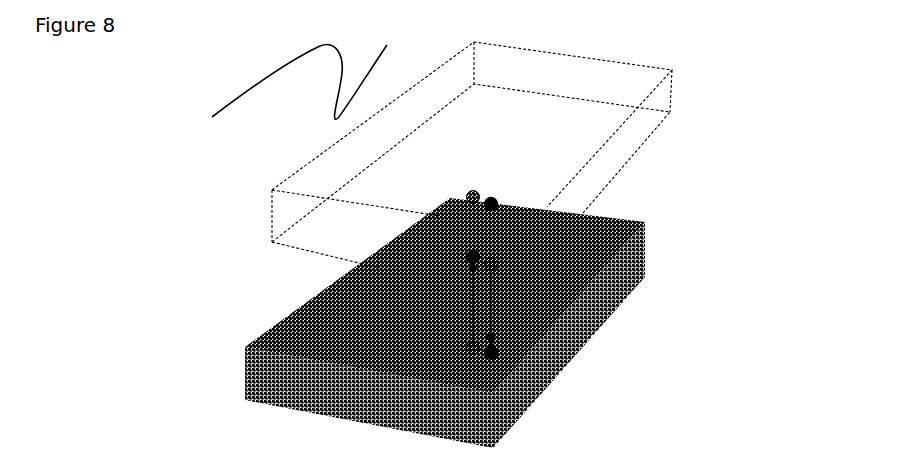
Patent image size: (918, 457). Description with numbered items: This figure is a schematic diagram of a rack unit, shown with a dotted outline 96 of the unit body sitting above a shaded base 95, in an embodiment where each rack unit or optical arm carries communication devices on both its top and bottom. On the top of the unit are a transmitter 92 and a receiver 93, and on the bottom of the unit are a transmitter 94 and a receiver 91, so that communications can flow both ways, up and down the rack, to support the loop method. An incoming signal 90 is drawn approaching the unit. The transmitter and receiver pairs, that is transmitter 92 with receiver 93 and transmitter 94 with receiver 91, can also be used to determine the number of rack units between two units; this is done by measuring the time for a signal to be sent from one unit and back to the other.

The incident radiation 90 is at (318, 70).
The receiver 91 is at (444, 251).
The transmitter 92 is at (444, 343).
The receiver 93 is at (508, 367).
The transmitter 94 is at (508, 252).
The substrate 95 is at (650, 274).
The enclosure 96 is at (683, 68).